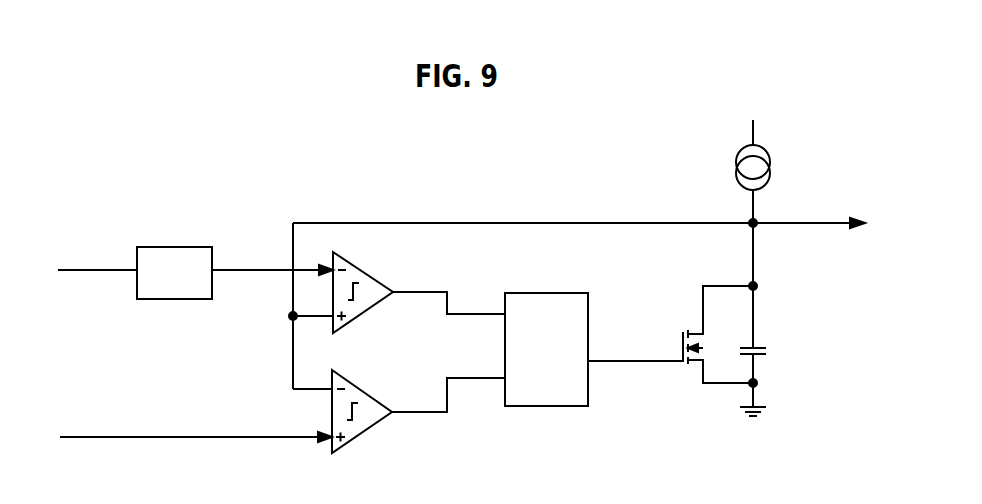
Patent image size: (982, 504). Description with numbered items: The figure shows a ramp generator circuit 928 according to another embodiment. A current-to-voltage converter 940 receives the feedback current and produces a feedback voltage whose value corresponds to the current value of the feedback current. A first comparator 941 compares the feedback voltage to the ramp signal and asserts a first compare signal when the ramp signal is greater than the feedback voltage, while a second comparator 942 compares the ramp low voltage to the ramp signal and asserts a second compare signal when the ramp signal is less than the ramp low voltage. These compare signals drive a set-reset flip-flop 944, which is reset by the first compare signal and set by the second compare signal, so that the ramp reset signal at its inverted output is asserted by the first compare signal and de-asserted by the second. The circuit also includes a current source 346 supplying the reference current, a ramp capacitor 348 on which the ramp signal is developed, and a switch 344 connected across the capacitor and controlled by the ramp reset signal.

The ramp generator circuit 928 is at (150, 155).
The current-to-voltage (I2V) converter 940 is at (173, 247).
The first comparator 941 is at (380, 277).
The second comparator 942 is at (372, 425).
The set-reset flip-flop (SRFF) 944 is at (540, 406).
The switch 344 is at (683, 338).
The current source 346 is at (736, 165).
The ramp capacitor 348 is at (766, 350).